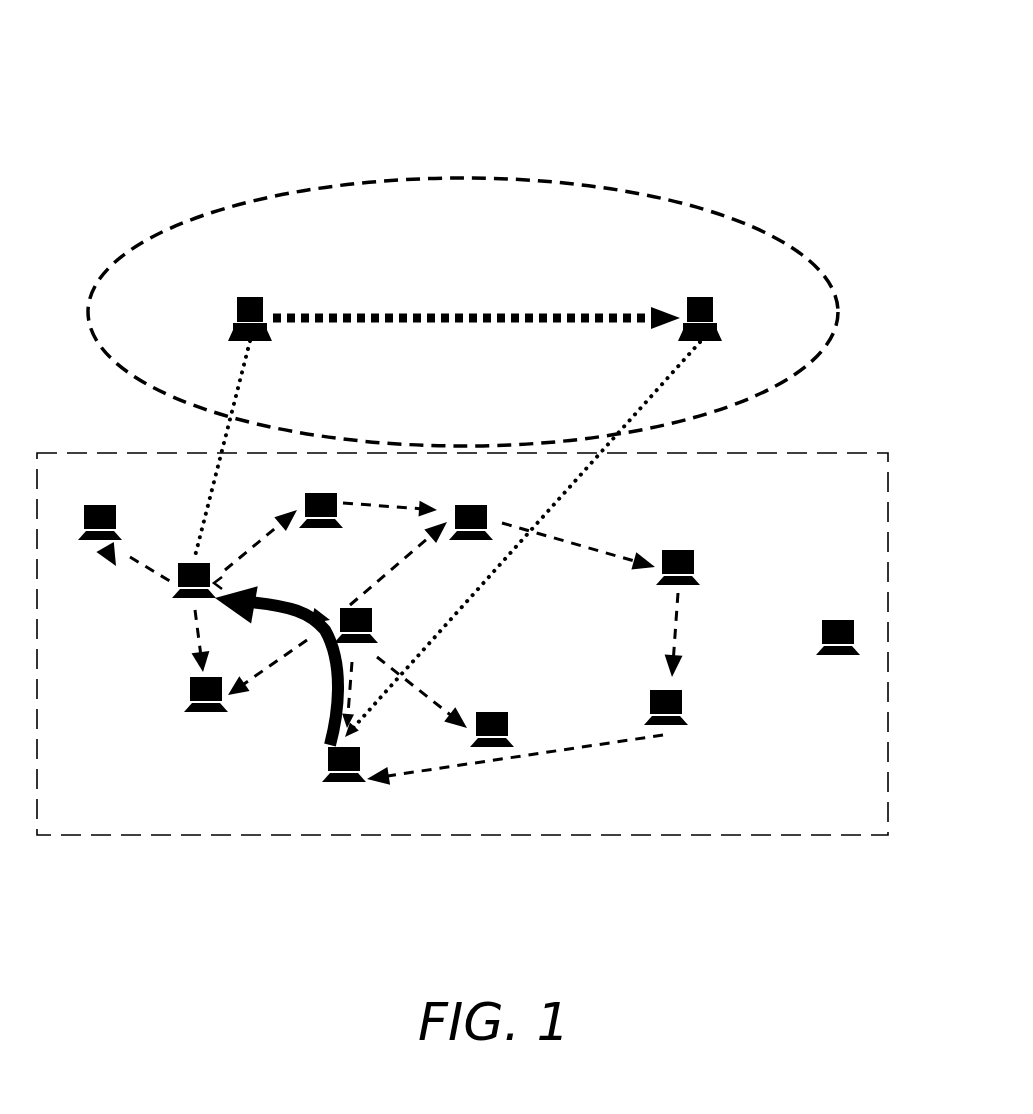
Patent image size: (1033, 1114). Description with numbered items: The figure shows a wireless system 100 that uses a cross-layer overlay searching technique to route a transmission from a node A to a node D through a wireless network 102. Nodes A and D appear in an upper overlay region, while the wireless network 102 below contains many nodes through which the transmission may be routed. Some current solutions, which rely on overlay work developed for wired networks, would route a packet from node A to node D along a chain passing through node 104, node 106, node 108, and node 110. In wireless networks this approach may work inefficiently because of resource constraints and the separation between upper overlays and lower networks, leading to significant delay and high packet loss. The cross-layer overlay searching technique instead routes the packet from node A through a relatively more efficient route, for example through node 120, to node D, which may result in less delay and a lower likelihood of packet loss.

The wireless system 100 is at (714, 89).
The wireless network 102 is at (207, 836).
The node 104 is at (330, 499).
The node 106 is at (480, 513).
The node 108 is at (678, 549).
The node 110 is at (640, 707).
The node 120 is at (372, 625).